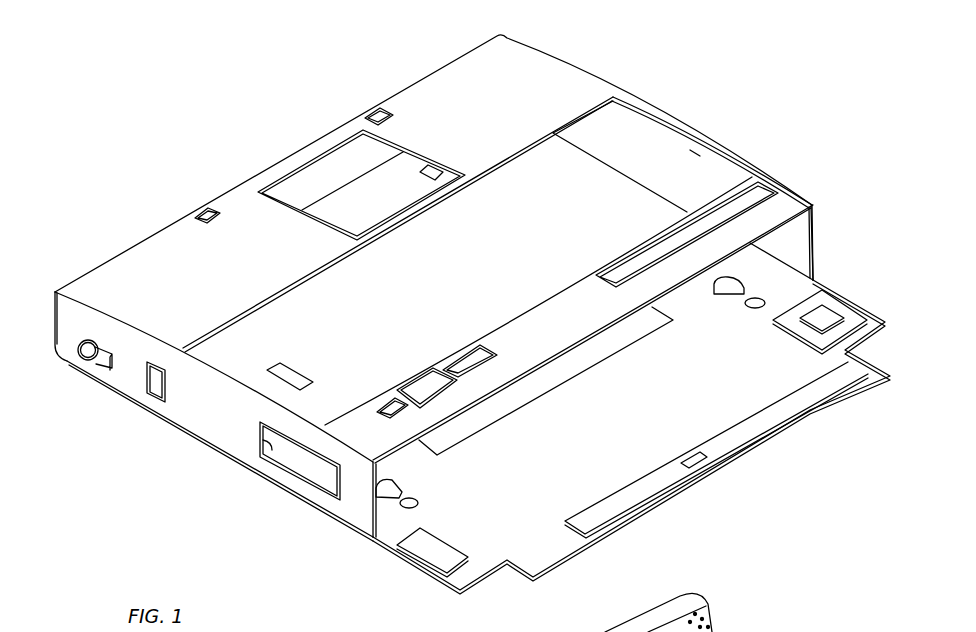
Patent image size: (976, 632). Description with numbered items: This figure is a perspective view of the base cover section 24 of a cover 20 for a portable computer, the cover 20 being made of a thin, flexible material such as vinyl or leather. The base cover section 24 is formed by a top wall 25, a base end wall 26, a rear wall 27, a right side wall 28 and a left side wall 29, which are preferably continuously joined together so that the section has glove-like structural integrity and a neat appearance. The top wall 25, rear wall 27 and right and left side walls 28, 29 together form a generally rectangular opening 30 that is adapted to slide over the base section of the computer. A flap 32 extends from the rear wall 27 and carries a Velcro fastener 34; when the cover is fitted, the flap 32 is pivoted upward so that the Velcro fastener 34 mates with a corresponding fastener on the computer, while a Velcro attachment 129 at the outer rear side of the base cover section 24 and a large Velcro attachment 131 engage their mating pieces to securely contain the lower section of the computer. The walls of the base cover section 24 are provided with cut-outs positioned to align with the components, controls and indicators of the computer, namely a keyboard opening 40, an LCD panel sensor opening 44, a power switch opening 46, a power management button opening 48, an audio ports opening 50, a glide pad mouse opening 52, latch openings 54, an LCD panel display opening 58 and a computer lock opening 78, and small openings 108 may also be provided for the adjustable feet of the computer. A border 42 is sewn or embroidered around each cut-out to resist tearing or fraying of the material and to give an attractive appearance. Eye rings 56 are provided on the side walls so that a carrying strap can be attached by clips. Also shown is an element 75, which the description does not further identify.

The cover 20 is at (213, 170).
The base cover section 24 is at (158, 209).
The top wall 25 is at (533, 62).
The base end wall 26 is at (78, 290).
The rear wall 27 is at (403, 463).
The right side wall 28 is at (200, 421).
The left side wall 29 is at (616, 84).
The rectangular opening 30 is at (800, 238).
The flap 32 is at (528, 548).
The Velcro fastener 34 is at (637, 495).
The keyboard opening 40 is at (664, 148).
The border 42 is at (706, 160).
The LCD panel sensor opening 44 is at (388, 398).
The power switch opening 46 is at (422, 385).
The power management button opening 48 is at (472, 356).
The audio ports opening 50 is at (313, 478).
The glide pad mouse opening 52 is at (320, 168).
The latch openings 54 is at (375, 106).
The eye rings 56 is at (83, 357).
The LCD panel display opening 58 is at (756, 192).
The component 75 is at (722, 630).
The computer lock opening 78 is at (147, 387).
The small openings 108 is at (726, 296).
The Velcro attachment 129 is at (430, 550).
The Velcro attachment 131 is at (850, 320).